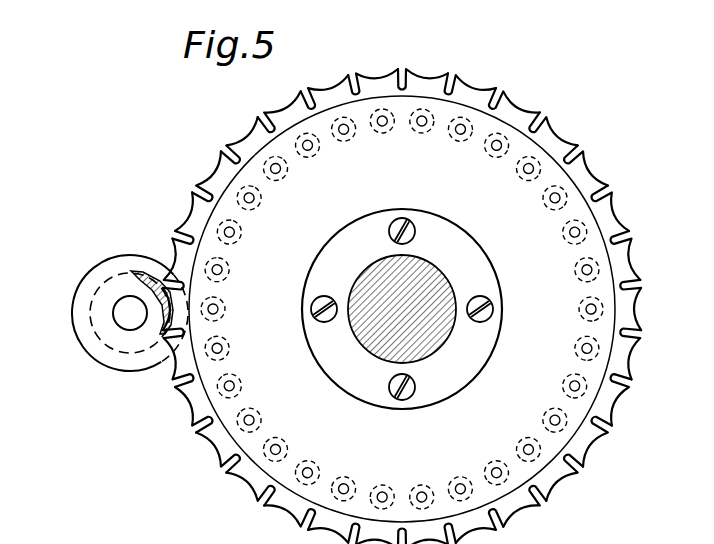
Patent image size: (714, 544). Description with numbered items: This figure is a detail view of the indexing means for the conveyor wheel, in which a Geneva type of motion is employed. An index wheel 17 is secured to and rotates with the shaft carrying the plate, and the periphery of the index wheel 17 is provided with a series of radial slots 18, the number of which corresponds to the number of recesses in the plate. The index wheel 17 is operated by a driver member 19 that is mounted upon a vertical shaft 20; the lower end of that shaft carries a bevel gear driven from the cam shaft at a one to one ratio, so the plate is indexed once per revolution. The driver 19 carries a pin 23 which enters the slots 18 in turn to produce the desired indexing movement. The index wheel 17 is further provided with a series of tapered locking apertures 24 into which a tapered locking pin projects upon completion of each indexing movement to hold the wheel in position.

The index wheel 17 is at (493, 175).
The radial slots 18 is at (504, 526).
The driver member 19 is at (108, 273).
The vertical shaft 20 is at (126, 320).
The pin 23 is at (170, 286).
The locking apertures 24 is at (567, 374).